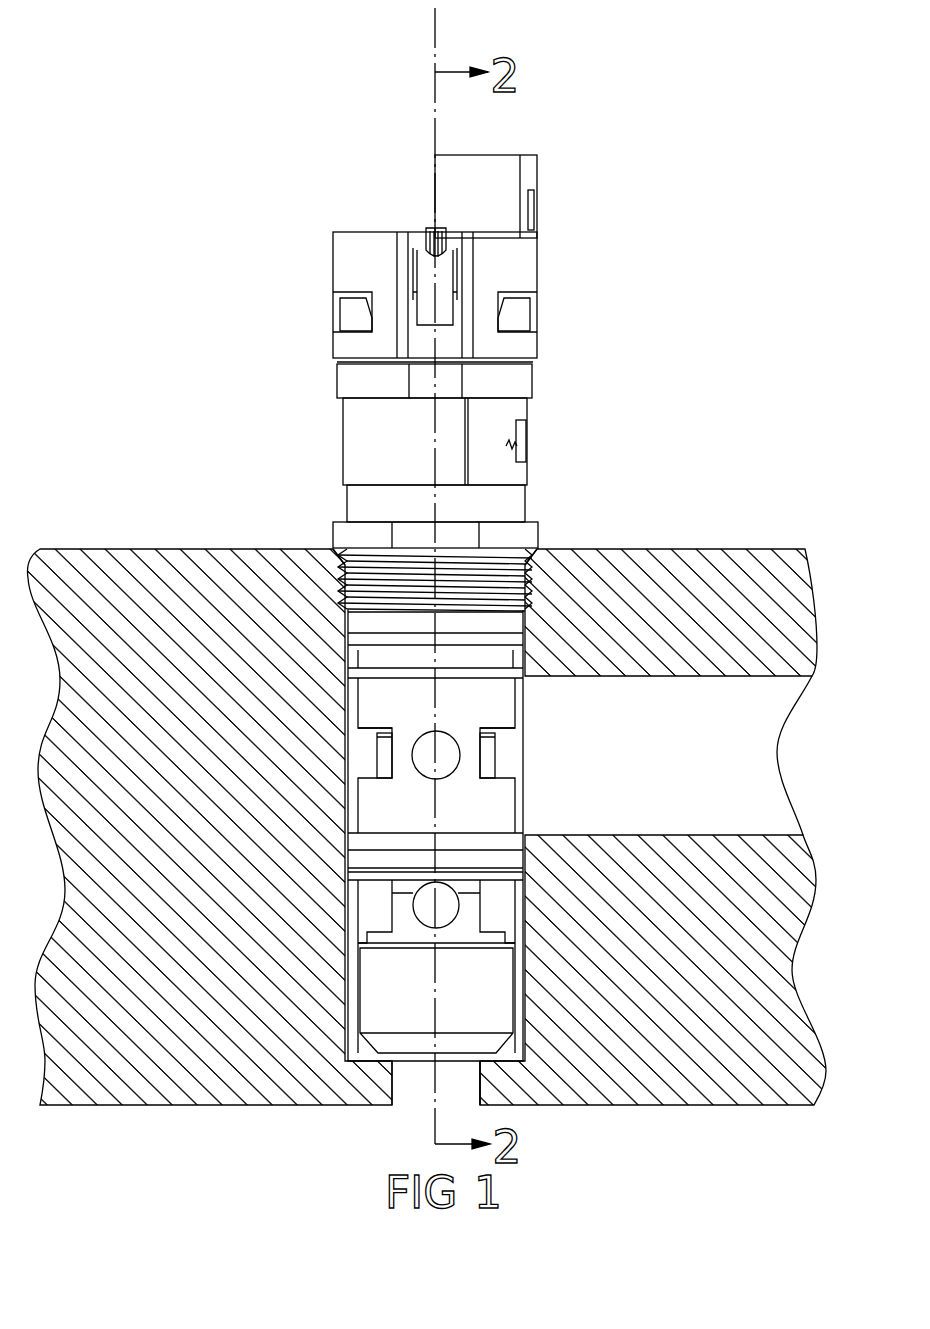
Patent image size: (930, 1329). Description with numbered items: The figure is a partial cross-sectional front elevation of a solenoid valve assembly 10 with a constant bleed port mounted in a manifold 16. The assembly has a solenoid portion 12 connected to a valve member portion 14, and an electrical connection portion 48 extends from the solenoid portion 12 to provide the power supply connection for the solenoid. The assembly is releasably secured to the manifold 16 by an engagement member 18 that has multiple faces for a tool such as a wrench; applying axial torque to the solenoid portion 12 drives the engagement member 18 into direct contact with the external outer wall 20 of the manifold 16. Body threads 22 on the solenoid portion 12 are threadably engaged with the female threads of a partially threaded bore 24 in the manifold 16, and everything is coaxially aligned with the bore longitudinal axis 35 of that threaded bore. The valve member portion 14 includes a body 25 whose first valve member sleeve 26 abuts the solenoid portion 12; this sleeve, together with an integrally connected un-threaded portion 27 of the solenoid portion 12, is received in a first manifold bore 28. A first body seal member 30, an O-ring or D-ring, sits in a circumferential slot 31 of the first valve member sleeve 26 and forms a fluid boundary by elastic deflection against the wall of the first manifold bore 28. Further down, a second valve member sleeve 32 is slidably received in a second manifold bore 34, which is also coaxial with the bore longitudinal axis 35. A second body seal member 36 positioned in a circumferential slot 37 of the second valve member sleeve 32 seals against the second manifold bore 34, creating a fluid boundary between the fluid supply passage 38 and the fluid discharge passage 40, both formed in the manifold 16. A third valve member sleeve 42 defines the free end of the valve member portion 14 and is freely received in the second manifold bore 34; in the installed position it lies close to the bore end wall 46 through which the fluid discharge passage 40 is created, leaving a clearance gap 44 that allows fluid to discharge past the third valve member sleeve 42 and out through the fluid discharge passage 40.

The solenoid valve assembly 10 is at (562, 396).
The solenoid portion 12 is at (357, 437).
The valve member portion 14 is at (468, 665).
The manifold 16 is at (692, 558).
The engagement member 18 is at (468, 527).
The external outer wall 20 is at (141, 543).
The body threads 22 is at (530, 582).
The partially threaded bore 24 is at (312, 560).
The body 25 is at (402, 920).
The first valve member sleeve 26 is at (515, 623).
The un-threaded portion 27 is at (527, 628).
The first manifold bore 28 is at (508, 645).
The first body seal member 30 is at (498, 658).
The circumferential slot 31 is at (508, 752).
The second valve member sleeve 32 is at (488, 840).
The second manifold bore 34 is at (522, 878).
The bore longitudinal axis 35 is at (433, 35).
The second body seal member 36 is at (503, 852).
The circumferential slot 37 is at (498, 845).
The fluid supply passage 38 is at (766, 769).
The fluid discharge passage 40 is at (430, 1087).
The third valve member sleeve 42 is at (415, 1008).
The clearance gap 44 is at (390, 1057).
The bore end wall 46 is at (497, 1080).
The electrical connection portion 48 is at (483, 173).